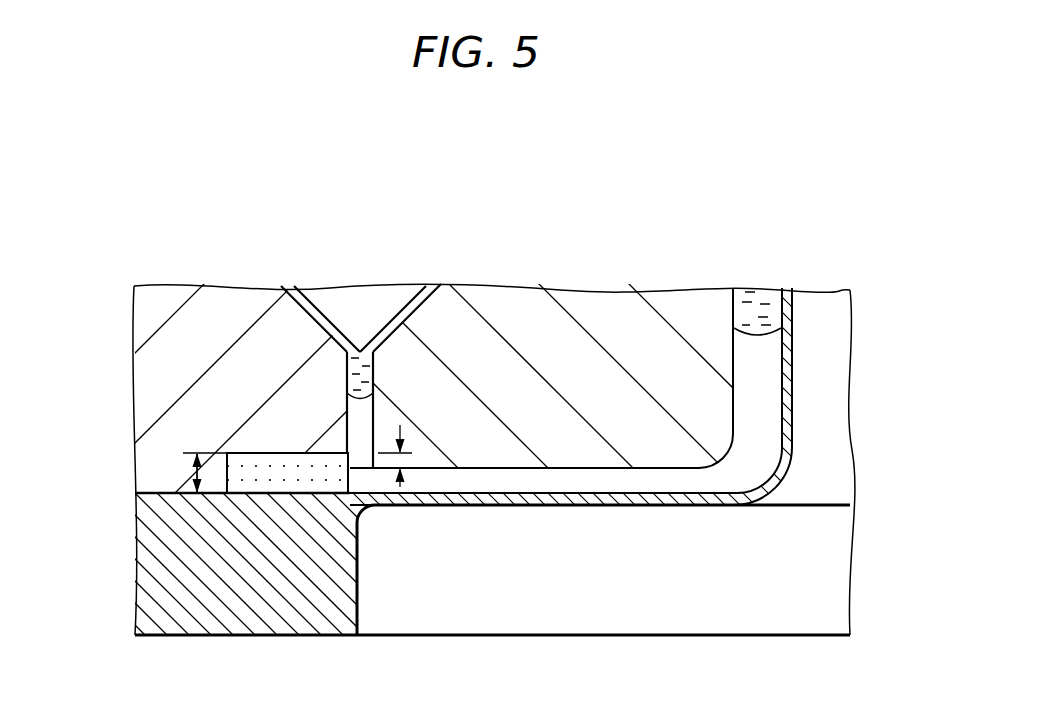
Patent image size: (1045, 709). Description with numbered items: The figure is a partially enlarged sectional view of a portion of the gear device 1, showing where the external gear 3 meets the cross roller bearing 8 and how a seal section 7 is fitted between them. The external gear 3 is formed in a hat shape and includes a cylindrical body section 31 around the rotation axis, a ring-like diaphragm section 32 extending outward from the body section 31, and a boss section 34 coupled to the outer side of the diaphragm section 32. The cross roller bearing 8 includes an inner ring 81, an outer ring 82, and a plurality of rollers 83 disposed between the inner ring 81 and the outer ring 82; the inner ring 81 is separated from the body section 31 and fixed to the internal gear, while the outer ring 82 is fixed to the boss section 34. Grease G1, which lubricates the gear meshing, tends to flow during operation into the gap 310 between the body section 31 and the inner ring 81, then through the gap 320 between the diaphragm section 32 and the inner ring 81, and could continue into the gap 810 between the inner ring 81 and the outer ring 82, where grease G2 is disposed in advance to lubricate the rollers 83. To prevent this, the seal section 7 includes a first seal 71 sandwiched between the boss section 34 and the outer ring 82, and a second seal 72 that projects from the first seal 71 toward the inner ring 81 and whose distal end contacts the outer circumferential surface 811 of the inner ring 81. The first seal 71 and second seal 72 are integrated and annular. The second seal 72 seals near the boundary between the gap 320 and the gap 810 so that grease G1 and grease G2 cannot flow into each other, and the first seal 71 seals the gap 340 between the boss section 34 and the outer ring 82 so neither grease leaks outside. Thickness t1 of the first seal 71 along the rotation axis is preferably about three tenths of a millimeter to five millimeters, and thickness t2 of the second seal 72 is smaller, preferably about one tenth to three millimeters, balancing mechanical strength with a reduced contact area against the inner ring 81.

The gear device 1 is at (846, 184).
The external gear 3 is at (814, 398).
The body section 31 is at (786, 352).
The gap 310 is at (758, 434).
The gap 320 is at (593, 483).
The diaphragm section 32 is at (700, 505).
The boss section 34 is at (240, 603).
The gap 340 is at (253, 465).
The seal section 7 is at (54, 504).
The first seal 71 is at (268, 457).
The second seal 72 is at (366, 460).
The cross roller bearing 8 is at (355, 258).
The inner ring 81 is at (457, 307).
The outer ring 82 is at (254, 307).
The rollers 83 is at (361, 281).
The gap 810 is at (347, 407).
The outer circumferential surface 811 is at (357, 426).
The grease G1 is at (767, 295).
The grease G2 is at (347, 368).
The thickness t1 is at (193, 488).
The thickness t2 is at (410, 456).